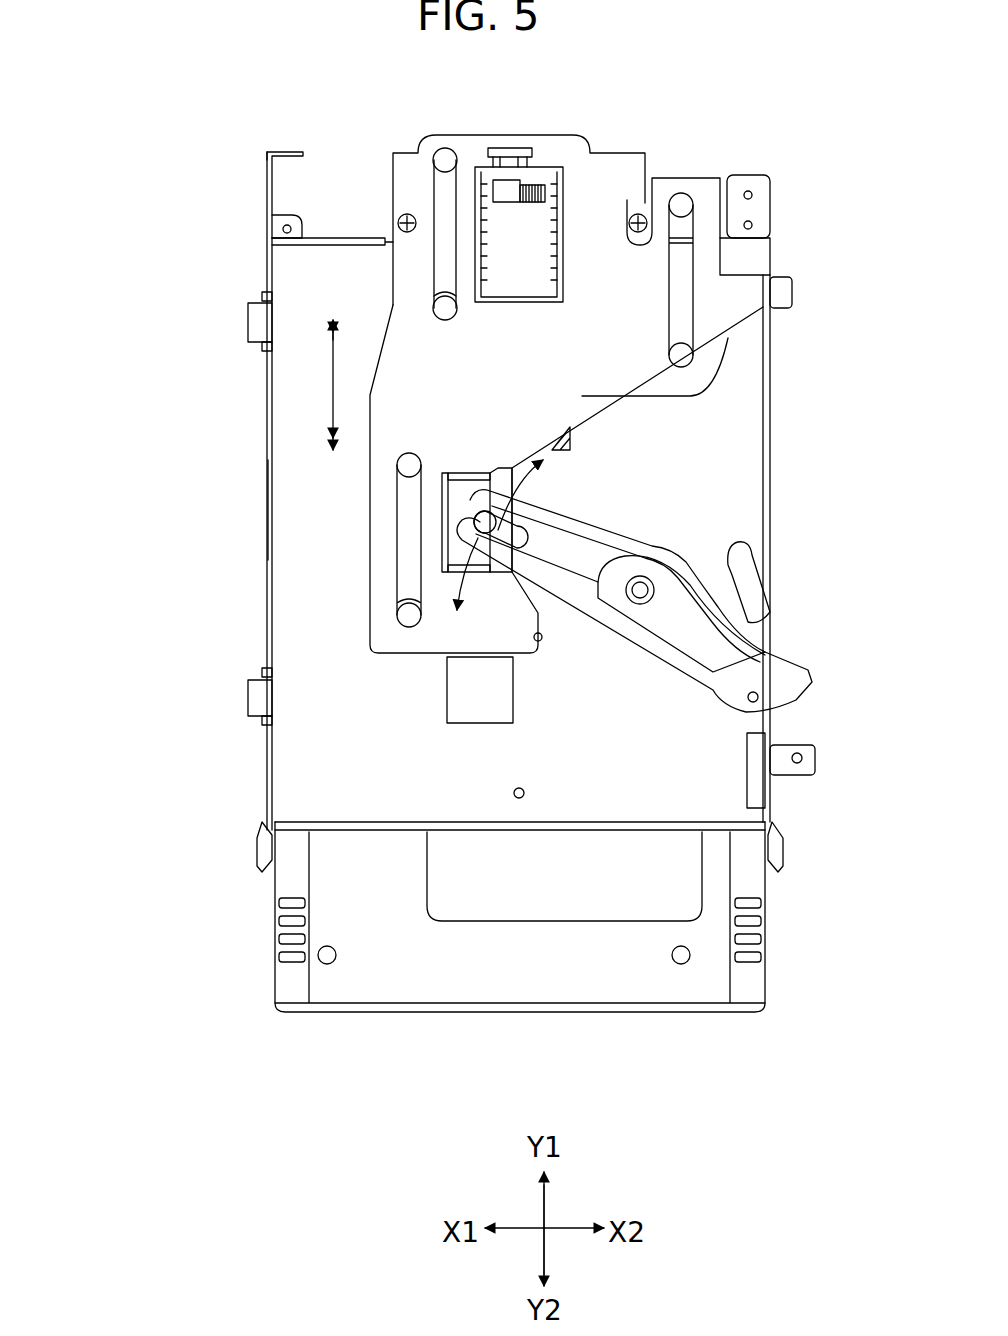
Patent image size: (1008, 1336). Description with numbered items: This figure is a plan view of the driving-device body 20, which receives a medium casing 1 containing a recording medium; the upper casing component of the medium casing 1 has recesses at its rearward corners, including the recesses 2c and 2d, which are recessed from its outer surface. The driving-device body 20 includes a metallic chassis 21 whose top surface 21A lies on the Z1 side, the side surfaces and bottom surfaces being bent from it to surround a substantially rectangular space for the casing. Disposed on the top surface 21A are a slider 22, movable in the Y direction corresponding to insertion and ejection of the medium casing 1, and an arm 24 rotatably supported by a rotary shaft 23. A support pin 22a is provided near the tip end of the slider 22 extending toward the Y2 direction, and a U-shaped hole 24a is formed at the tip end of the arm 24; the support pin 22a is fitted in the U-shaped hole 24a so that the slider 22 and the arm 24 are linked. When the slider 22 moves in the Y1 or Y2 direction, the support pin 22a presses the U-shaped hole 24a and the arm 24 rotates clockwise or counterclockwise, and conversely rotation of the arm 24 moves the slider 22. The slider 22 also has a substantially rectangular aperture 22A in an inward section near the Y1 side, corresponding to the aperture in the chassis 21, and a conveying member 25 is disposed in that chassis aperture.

The medium casing 1 is at (774, 982).
The recess 2c is at (324, 965).
The recess 2d is at (684, 965).
The driving-device body 20 is at (173, 178).
The chassis 21 is at (260, 447).
The top surface 21A is at (290, 586).
The slider 22 is at (580, 397).
The aperture 22A is at (517, 302).
The support pin 22a is at (476, 522).
The rotary shaft 23 is at (632, 601).
The arm 24 is at (690, 655).
The U-shaped hole 24a is at (515, 536).
The conveying member 25 is at (535, 264).